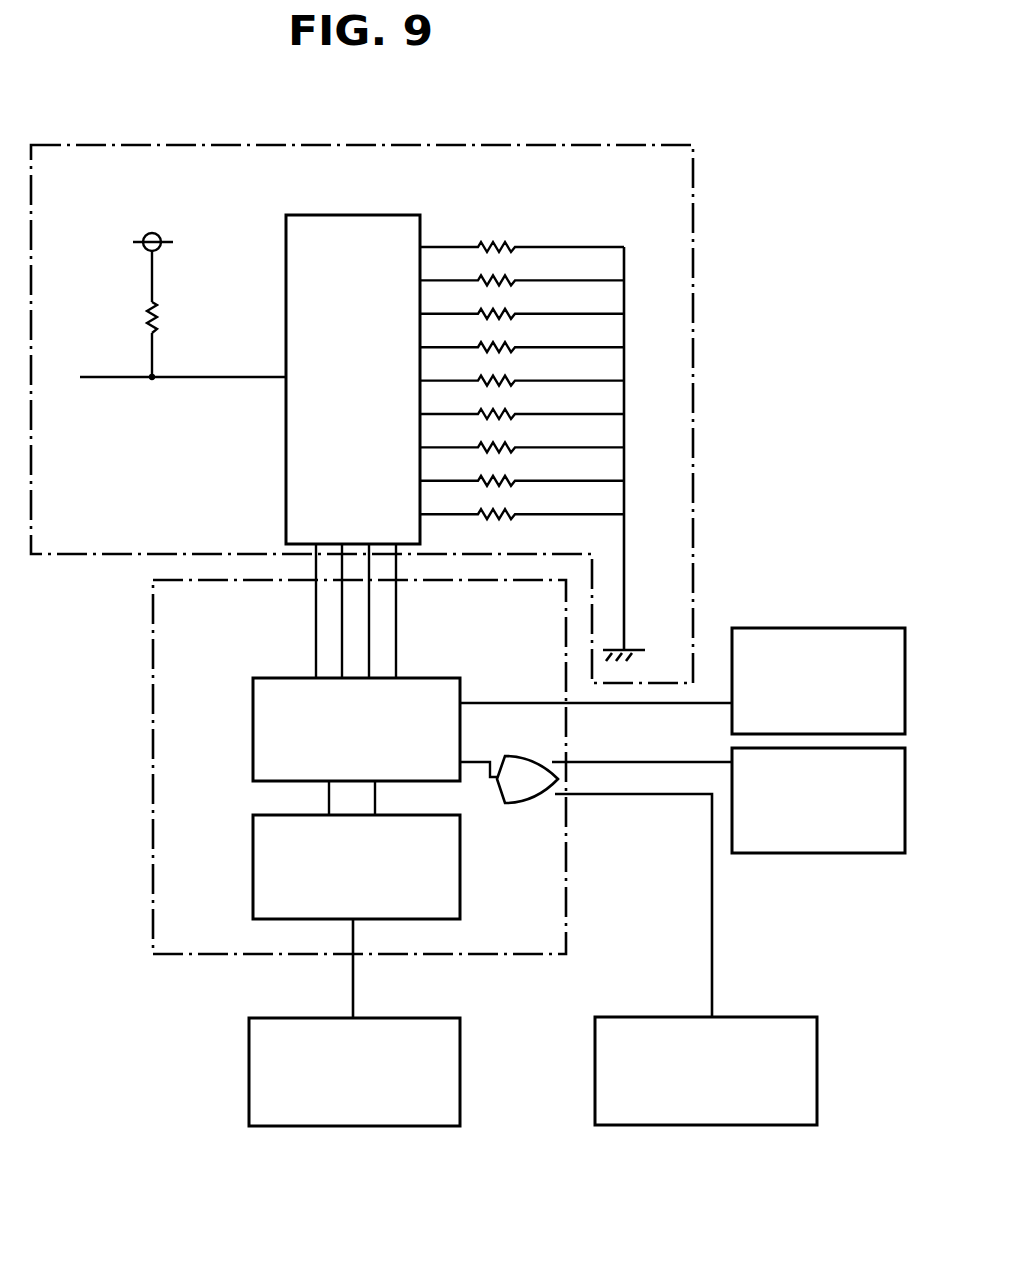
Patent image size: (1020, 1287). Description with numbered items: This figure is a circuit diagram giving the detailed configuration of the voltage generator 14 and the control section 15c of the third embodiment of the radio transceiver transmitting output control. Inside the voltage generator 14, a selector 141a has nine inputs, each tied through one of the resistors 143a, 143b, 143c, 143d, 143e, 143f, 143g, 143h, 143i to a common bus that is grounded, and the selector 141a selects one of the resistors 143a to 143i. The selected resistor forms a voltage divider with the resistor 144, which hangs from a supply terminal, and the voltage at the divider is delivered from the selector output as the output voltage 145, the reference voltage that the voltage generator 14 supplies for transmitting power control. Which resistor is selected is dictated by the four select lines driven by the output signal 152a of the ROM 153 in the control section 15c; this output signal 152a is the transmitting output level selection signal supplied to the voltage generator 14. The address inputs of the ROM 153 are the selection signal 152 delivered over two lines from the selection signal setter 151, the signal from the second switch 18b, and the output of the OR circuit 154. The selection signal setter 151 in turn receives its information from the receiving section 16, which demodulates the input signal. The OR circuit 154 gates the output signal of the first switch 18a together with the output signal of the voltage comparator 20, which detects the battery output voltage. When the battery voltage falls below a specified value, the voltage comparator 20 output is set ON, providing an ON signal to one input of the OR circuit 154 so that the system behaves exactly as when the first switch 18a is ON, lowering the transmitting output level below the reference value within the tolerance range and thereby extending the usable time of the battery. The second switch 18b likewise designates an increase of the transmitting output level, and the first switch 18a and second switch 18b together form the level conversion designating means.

The voltage generator 14 is at (694, 540).
The selector 141a is at (377, 215).
The resistor 143a is at (497, 233).
The resistor 143b is at (508, 273).
The resistor 143c is at (508, 306).
The resistor 143d is at (508, 340).
The resistor 143e is at (508, 373).
The resistor 143f is at (508, 407).
The resistor 143g is at (508, 440).
The resistor 143h is at (508, 473).
The resistor 143i is at (508, 507).
The resistor 144 is at (163, 317).
The output voltage 145 is at (107, 378).
The control section 15c is at (567, 923).
The selection signal setter 151 is at (460, 880).
The selection signal 152 is at (376, 800).
The output signal of the ROM 152a is at (397, 626).
The ROM 153 is at (437, 677).
The OR circuit 154 is at (527, 755).
The receiving section 16 is at (460, 1067).
The first switch 18a is at (848, 855).
The second switch 18b is at (835, 627).
The voltage comparator 20 is at (785, 1015).